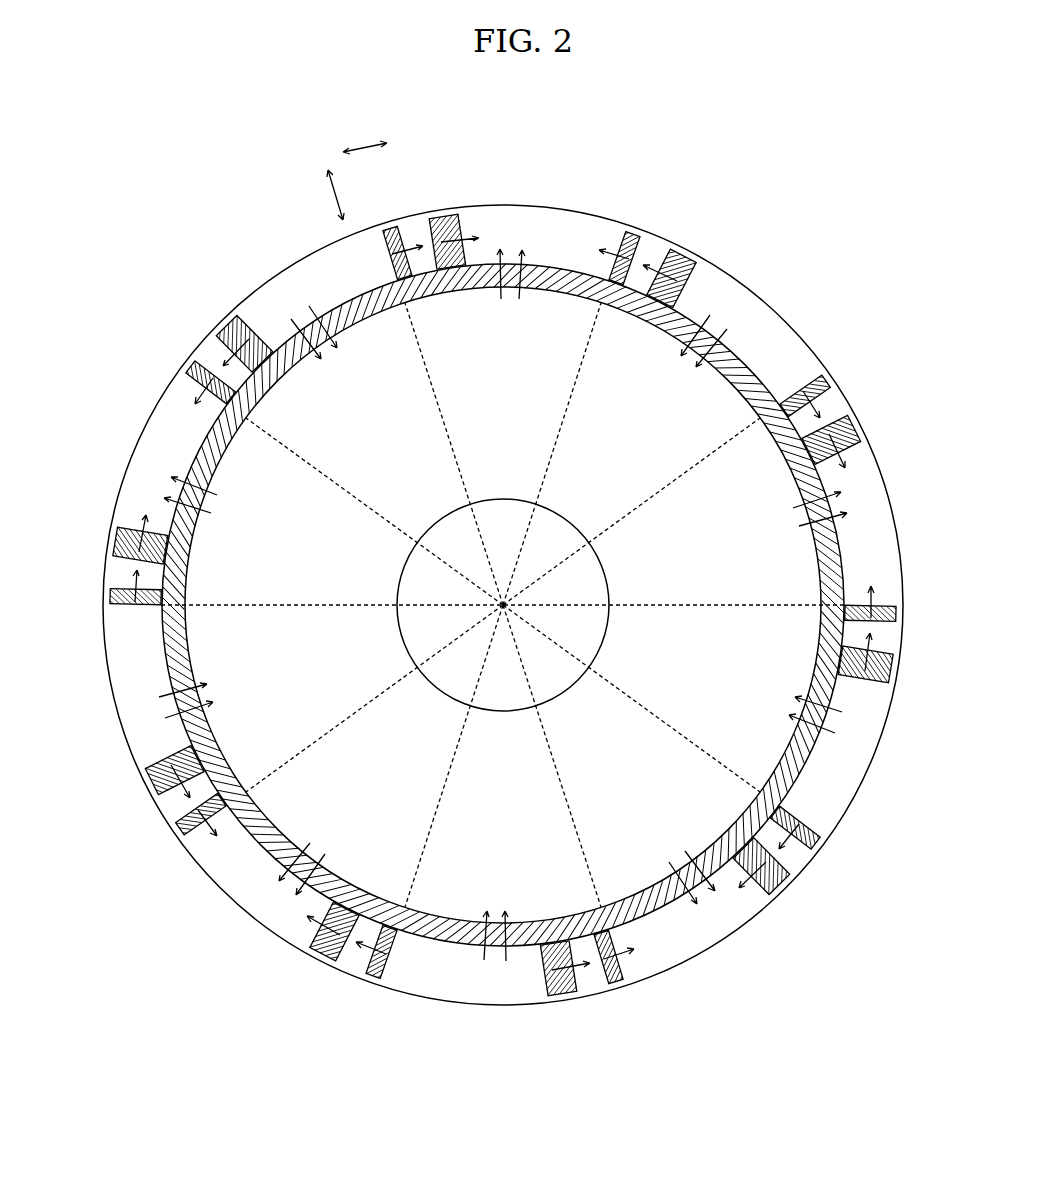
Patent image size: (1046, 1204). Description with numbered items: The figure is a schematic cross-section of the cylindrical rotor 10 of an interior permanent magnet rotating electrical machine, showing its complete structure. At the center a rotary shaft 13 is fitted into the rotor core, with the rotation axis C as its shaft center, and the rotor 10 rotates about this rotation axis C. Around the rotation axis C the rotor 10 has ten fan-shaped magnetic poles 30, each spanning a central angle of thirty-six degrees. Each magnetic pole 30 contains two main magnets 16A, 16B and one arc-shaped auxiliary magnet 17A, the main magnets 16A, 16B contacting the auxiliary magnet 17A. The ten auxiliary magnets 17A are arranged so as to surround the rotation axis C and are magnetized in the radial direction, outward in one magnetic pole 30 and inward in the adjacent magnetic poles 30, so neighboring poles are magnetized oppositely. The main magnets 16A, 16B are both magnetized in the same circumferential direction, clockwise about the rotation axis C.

The rotor 10 is at (771, 192).
The rotary shaft 13 is at (556, 528).
The main magnet 16A is at (888, 668).
The main magnet 16B is at (893, 614).
The auxiliary magnet 17A is at (372, 303).
The magnetic pole 30 is at (506, 209).
The rotation axis C is at (503, 605).